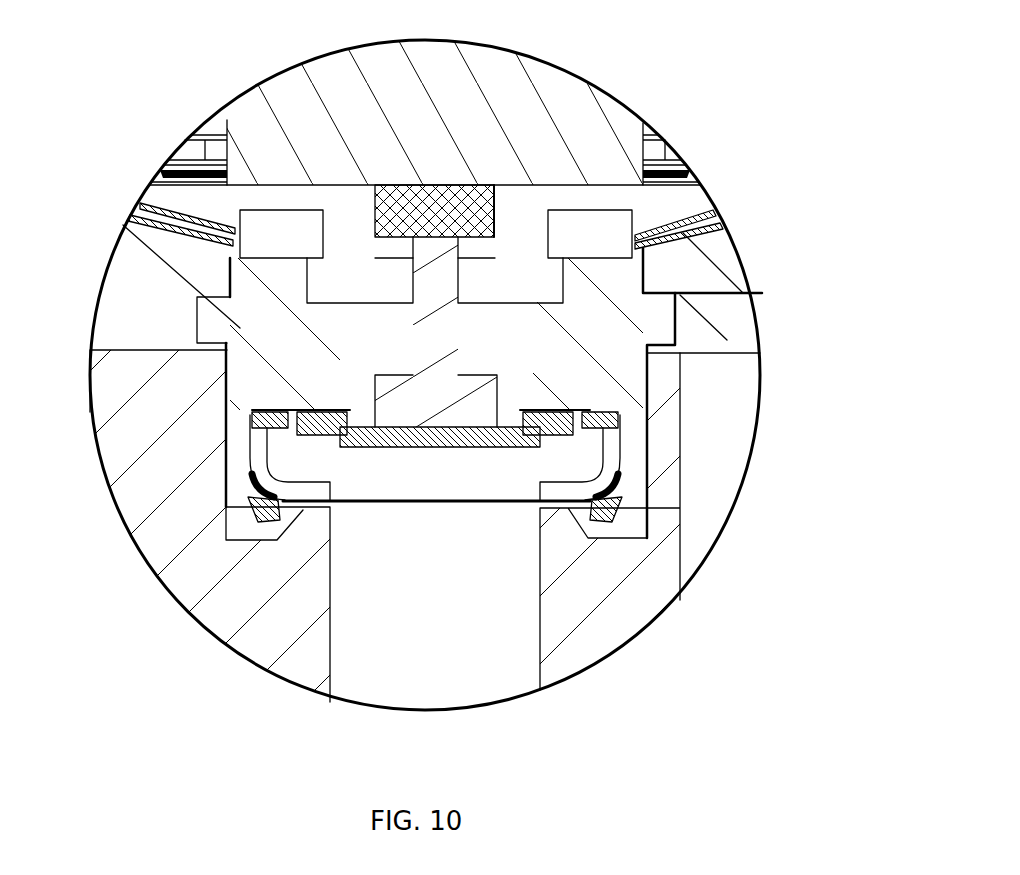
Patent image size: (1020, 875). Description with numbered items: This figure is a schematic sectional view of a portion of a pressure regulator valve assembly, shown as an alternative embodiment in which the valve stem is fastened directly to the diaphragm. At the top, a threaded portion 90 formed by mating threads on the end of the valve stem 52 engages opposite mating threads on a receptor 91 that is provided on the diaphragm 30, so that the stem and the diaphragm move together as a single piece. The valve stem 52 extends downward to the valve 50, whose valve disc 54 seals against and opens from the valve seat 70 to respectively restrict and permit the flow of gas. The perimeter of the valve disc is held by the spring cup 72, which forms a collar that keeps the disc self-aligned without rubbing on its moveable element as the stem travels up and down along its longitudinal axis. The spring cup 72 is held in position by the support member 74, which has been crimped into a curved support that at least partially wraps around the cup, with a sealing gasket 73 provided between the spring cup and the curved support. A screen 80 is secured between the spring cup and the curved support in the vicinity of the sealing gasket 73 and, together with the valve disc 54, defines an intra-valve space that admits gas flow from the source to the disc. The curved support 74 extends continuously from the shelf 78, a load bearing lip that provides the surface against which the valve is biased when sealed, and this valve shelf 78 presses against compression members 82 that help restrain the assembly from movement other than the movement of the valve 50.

The diaphragm 30 is at (595, 187).
The valve 50 is at (430, 287).
The valve stem 52 is at (418, 425).
The valve disc 54 is at (463, 438).
The valve seat 70 is at (553, 378).
The spring cup 72 is at (262, 440).
The sealing gasket 73 is at (258, 493).
The support member 74 is at (245, 494).
The shelf 78 is at (625, 320).
The screen 80 is at (437, 500).
The compression members 82 is at (683, 256).
The threaded portion 90 is at (413, 183).
The receptor 91 is at (495, 195).